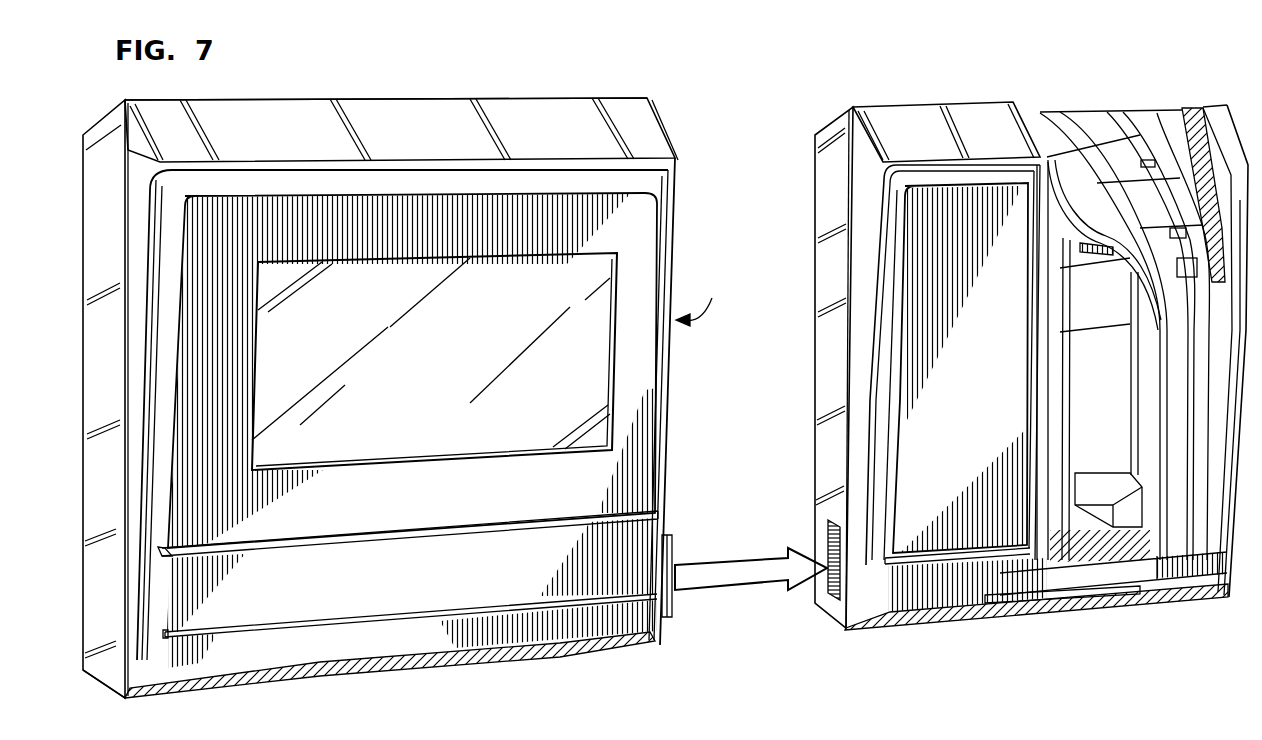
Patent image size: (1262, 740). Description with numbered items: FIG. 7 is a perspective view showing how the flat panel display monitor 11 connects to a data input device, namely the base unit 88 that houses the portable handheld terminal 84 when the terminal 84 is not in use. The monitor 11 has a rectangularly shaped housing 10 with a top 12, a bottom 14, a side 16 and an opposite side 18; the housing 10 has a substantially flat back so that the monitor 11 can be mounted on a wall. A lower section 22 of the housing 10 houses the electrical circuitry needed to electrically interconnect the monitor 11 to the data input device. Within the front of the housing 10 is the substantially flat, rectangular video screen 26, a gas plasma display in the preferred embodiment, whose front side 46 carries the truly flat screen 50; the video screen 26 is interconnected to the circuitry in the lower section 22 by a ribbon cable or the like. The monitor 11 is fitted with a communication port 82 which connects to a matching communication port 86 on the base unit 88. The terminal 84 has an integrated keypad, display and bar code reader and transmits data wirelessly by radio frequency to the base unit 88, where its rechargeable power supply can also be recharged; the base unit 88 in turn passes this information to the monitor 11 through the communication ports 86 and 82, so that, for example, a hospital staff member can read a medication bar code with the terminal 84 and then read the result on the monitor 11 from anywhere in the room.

The housing 10 is at (600, 80).
The flat panel display monitor 11 is at (296, 89).
The top 12 is at (400, 94).
The bottom 14 is at (456, 664).
The side 16 is at (108, 353).
The side 18 is at (675, 204).
The lower section 22 is at (387, 583).
The video screen 26 is at (694, 307).
The front side 46 is at (640, 368).
The screen 50 is at (462, 356).
The communication port 82 is at (668, 537).
The portable handheld terminal 84 is at (1172, 535).
The communication port 86 is at (827, 548).
The base unit 88 is at (1003, 610).